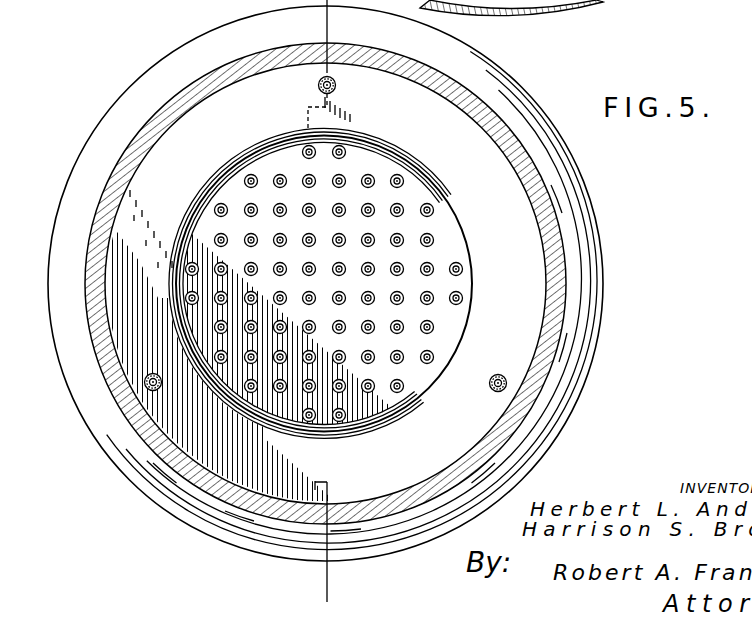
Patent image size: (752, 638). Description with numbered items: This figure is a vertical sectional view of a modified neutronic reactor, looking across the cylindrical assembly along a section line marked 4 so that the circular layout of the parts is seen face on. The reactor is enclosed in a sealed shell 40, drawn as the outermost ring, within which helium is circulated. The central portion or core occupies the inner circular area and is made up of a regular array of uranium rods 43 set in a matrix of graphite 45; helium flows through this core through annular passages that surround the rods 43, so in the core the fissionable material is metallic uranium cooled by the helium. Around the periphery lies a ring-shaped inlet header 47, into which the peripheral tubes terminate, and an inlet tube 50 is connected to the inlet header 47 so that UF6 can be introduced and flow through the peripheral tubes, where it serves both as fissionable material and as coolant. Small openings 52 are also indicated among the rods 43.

The sealed shell 40 is at (600, 240).
The uranium rods 43 is at (218, 204).
The graphite 45 is at (333, 292).
The inlet header 47 is at (195, 126).
The inlet tube 50 is at (318, 86).
The openings 52 is at (398, 176).
The section line 4- 4 is at (340, 590).